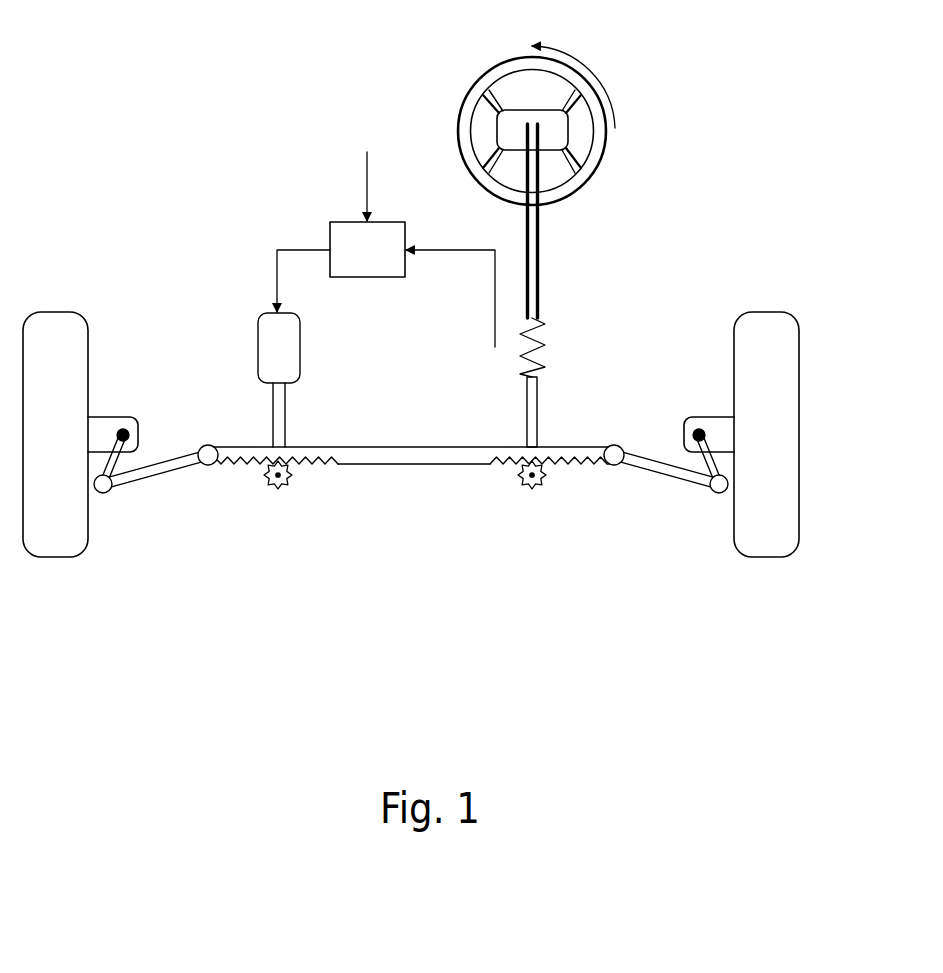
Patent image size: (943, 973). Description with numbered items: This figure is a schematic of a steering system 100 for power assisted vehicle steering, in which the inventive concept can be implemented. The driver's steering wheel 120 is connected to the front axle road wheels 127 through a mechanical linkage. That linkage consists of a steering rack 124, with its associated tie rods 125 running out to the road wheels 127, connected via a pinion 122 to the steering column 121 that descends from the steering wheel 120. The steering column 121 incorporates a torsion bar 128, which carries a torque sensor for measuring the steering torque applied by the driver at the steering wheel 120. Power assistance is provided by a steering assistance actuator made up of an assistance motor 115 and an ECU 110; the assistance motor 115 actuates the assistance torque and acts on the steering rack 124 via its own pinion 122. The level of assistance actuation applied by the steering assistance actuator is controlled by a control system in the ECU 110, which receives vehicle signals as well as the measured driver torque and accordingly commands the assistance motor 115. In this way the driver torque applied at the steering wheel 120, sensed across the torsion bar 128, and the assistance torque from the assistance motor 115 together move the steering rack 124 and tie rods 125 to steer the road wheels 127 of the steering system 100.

The steering system 100 is at (136, 218).
The ECU 110 is at (350, 277).
The assistance motor 115 is at (287, 328).
The steering wheel 120 is at (606, 157).
The steering column 121 is at (541, 245).
The pinion 122 is at (278, 490).
The steering rack 124 is at (238, 452).
The tie rods 125 is at (177, 455).
The front axle road wheels 127 is at (40, 538).
The torsion bar 128 is at (544, 340).